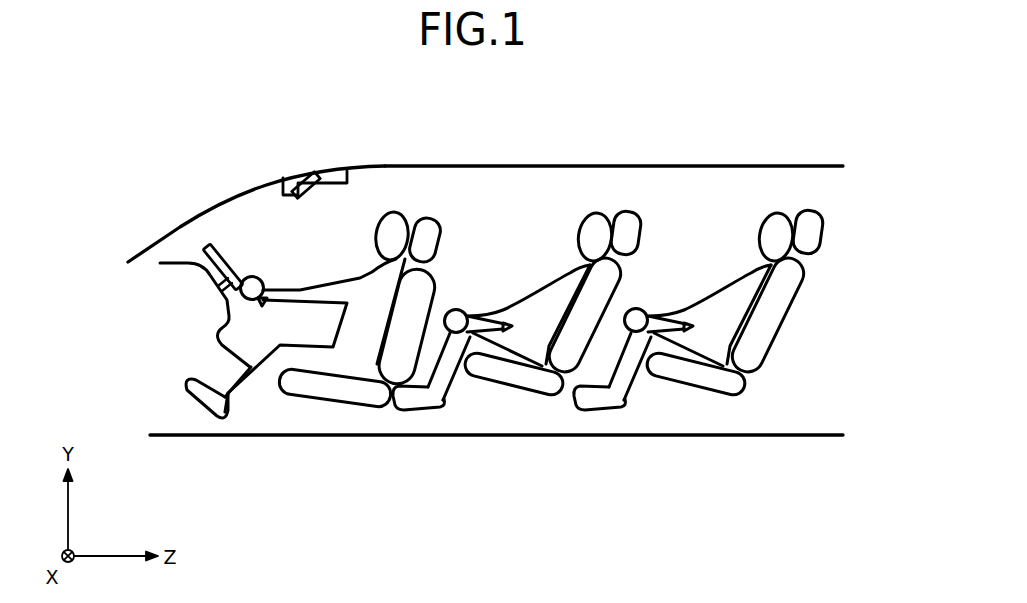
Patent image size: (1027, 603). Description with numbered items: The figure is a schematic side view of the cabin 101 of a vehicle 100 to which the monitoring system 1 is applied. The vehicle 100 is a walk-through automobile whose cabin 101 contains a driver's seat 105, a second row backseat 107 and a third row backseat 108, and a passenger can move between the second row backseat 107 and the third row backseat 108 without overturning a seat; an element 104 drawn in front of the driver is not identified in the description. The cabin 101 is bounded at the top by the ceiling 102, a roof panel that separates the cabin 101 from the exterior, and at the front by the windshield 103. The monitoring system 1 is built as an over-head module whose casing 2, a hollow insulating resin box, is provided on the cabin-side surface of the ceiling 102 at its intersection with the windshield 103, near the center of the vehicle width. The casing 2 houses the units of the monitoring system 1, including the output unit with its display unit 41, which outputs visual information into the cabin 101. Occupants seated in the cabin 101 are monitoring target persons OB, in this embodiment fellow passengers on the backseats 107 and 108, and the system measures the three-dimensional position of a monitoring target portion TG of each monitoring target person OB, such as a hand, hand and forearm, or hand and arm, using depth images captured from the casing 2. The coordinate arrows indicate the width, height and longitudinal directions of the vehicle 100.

The monitoring system 1 is at (332, 184).
The casing 2 is at (294, 196).
The display unit 41 is at (307, 191).
The vehicle 100 is at (485, 260).
The cabin 101 is at (788, 356).
The ceiling 102 is at (480, 169).
The windshield 103 is at (201, 221).
The steering wheel 104 is at (203, 248).
The driver's seat 105 is at (313, 405).
The second row backseat 107 is at (510, 395).
The third row backseat 108 is at (690, 393).
The monitoring target portion TG is at (401, 222).
The monitoring target person OB is at (543, 271).